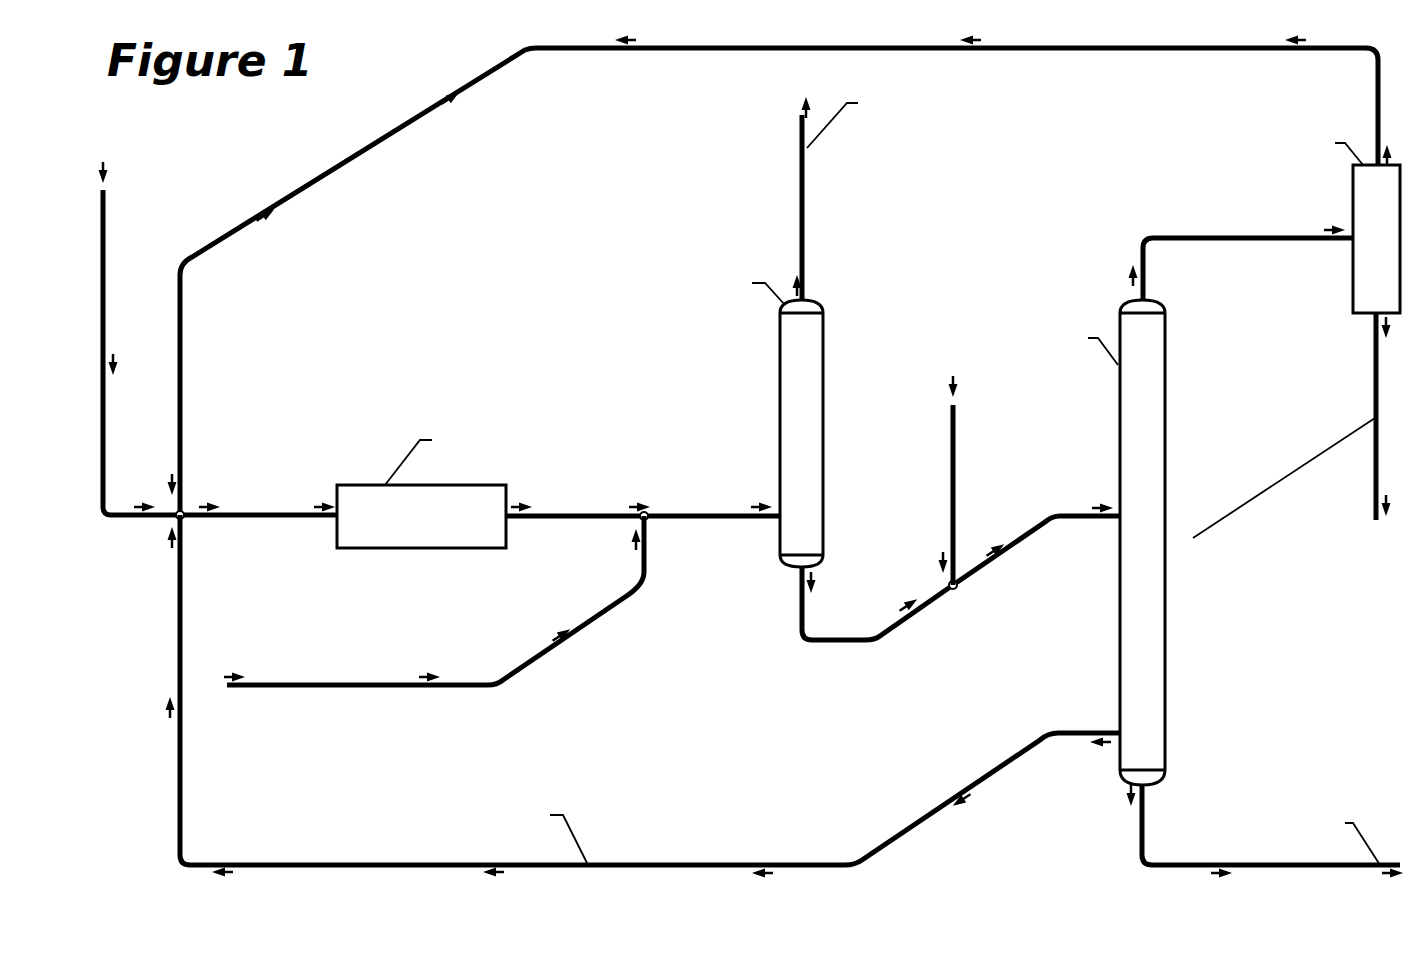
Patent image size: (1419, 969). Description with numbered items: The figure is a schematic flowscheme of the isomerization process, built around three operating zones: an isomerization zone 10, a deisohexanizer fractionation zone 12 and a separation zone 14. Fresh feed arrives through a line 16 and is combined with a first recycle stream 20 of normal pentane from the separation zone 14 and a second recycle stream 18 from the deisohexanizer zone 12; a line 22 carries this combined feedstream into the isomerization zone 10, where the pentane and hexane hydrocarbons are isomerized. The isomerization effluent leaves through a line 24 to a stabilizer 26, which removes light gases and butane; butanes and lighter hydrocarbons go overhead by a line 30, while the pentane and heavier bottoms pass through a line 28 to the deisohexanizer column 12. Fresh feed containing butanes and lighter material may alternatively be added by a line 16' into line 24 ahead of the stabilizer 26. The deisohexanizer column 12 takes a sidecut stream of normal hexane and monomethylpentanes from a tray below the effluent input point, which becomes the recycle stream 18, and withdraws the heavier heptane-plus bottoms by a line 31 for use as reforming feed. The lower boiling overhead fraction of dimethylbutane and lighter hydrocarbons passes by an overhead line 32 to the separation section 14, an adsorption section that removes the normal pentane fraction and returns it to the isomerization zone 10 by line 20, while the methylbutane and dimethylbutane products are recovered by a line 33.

The isomerization zone 10 is at (392, 548).
The deisohexanizer fractionation zone 12 is at (1165, 422).
The separation zone 14 is at (1353, 265).
The fresh feed line 16 is at (142, 368).
The alternate fresh feed line 16' is at (478, 600).
The second recycle stream 18 is at (181, 615).
The first recycle stream 20 is at (181, 445).
The combined feed line 22 is at (228, 513).
The isomerization effluent line 24 is at (710, 515).
The stabilizer 26 is at (824, 370).
The stabilizer bottoms line 28 is at (798, 608).
The stabilizer overhead line 30 is at (807, 230).
The heavy hydrocarbon line 31 is at (1137, 838).
The deisohexanizer overhead line 32 is at (1265, 238).
The product line 33 is at (1376, 368).